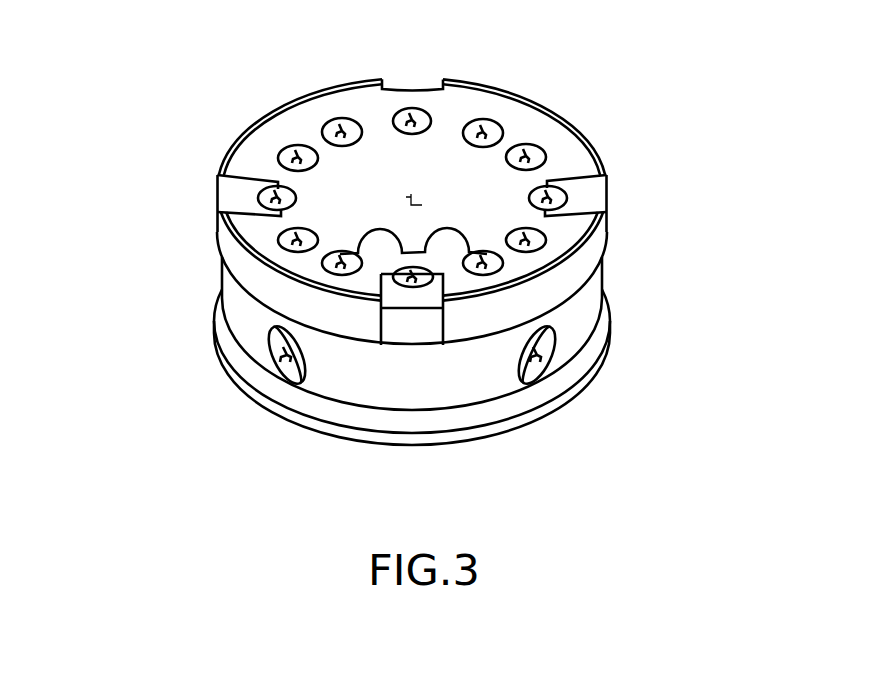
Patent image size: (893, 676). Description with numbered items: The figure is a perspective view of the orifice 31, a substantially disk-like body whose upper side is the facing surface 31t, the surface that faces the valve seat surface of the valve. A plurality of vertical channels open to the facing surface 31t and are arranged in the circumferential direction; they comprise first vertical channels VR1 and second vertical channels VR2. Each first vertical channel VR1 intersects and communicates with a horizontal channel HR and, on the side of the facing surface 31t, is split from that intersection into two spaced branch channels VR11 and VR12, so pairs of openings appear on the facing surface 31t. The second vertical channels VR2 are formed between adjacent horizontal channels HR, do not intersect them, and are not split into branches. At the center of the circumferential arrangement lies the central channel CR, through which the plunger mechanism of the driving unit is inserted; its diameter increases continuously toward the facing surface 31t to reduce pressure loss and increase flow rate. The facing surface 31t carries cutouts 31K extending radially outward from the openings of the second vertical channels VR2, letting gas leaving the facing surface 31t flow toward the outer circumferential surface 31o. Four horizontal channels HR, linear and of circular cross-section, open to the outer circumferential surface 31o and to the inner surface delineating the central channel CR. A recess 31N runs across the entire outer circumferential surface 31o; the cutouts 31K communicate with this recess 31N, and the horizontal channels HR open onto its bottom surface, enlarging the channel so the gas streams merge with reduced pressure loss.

The orifice 31 is at (412, 248).
The facing surface 31t is at (338, 105).
The cutouts 31K is at (432, 88).
The recess 31N is at (490, 378).
The outer circumferential surface 31o is at (327, 378).
The first vertical channels VR1 is at (412, 198).
The branch channel VR11 is at (282, 232).
The branch channel VR12 is at (326, 256).
The second vertical channels VR2 is at (410, 108).
The central channel CR is at (413, 195).
The horizontal channels HR is at (273, 362).